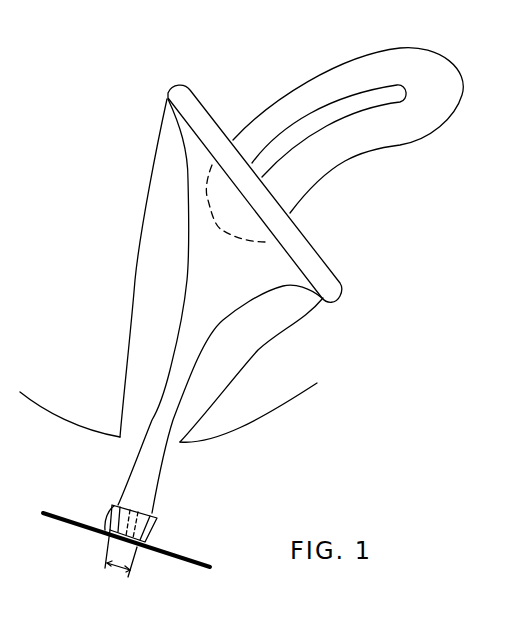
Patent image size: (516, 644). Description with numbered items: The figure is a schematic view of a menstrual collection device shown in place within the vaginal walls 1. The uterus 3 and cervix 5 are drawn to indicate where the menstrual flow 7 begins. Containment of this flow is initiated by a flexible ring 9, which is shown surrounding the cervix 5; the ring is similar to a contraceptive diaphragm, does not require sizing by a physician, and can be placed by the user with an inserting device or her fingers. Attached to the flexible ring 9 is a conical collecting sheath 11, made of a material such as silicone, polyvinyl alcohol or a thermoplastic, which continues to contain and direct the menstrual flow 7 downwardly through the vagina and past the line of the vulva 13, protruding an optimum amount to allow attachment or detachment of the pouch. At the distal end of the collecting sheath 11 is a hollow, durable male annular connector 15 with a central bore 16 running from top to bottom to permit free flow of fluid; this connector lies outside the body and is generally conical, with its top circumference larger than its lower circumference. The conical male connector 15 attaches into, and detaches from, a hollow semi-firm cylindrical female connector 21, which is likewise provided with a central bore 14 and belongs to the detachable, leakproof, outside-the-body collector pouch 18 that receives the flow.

The vaginal walls 1 is at (127, 331).
The uterus 3 is at (300, 85).
The cervix 5 is at (208, 200).
The menstrual flow 7 is at (213, 300).
The flexible ring 9 is at (307, 237).
The collecting sheath 11 is at (192, 238).
The vulva 13 is at (285, 413).
The central bore 14 is at (118, 568).
The male annular connector 15 is at (145, 527).
The central bore 16 is at (130, 518).
The collector pouch 18 is at (182, 563).
The female connector 21 is at (113, 533).